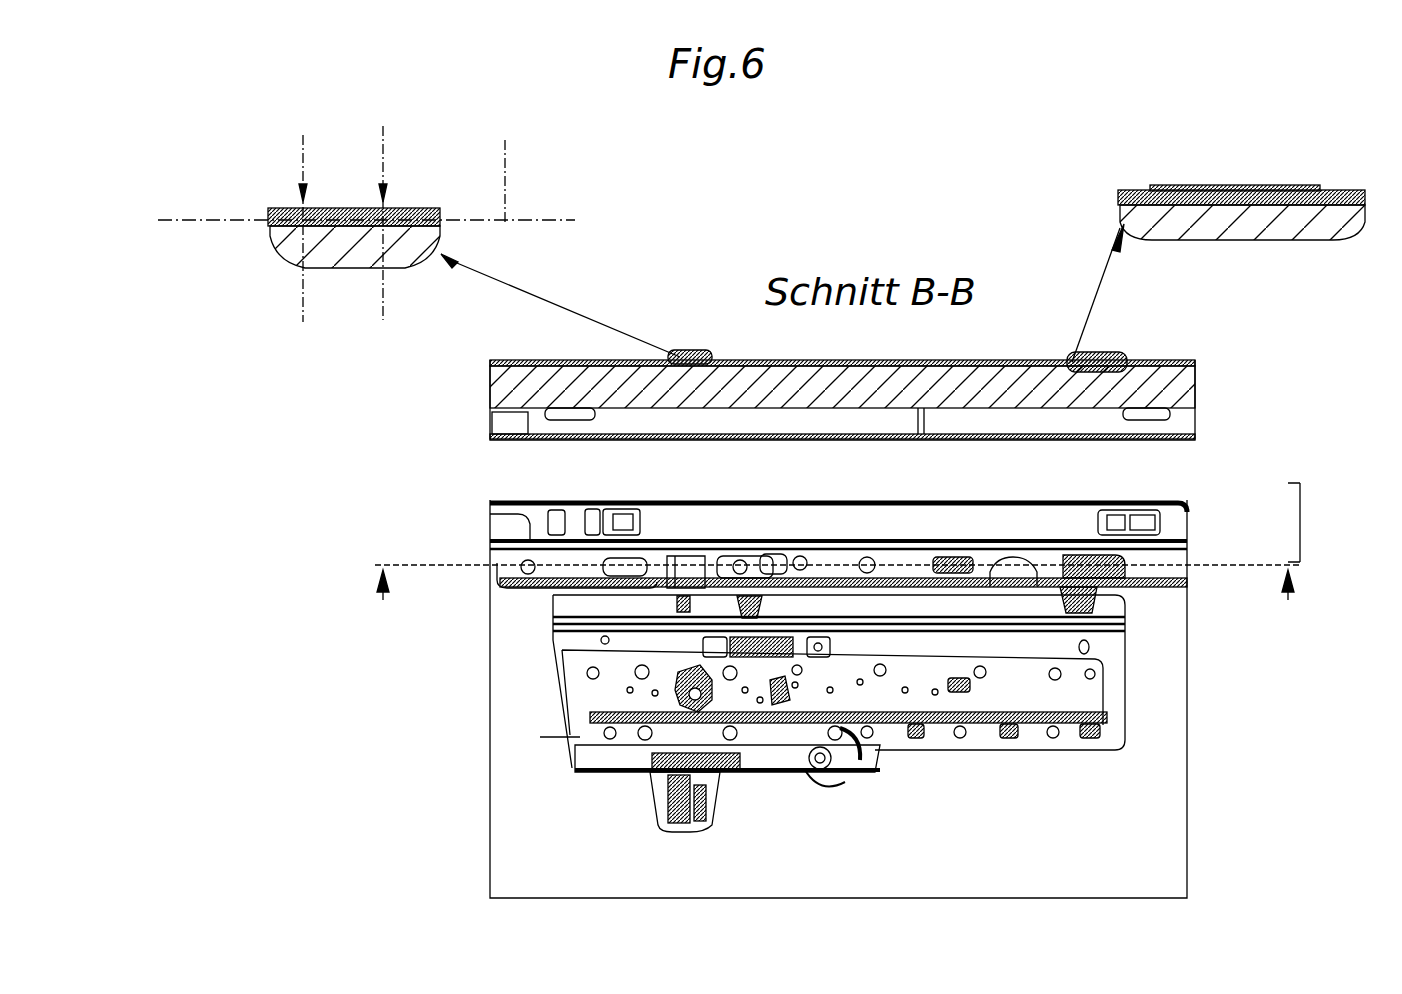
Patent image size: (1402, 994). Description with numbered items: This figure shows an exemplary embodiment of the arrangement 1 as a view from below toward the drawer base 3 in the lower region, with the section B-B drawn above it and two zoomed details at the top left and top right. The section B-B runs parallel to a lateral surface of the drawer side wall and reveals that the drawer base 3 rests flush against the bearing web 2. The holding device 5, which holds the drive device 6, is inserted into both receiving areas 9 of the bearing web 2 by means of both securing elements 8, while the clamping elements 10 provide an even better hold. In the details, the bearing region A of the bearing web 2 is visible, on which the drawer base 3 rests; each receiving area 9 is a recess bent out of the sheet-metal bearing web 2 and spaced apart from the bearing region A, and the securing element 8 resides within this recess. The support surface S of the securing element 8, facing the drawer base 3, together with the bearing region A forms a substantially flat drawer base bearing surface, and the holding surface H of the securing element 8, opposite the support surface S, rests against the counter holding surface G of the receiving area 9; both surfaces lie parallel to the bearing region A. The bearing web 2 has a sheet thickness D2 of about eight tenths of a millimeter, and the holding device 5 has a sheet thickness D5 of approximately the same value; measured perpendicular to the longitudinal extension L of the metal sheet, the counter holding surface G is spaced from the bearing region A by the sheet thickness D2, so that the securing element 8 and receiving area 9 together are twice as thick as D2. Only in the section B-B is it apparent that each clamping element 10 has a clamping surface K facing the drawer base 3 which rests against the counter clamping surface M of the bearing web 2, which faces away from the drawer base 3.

The arrangement 1 is at (1302, 516).
The bearing web 2 is at (1172, 560).
The drawer base 3 is at (1140, 793).
The holding device 5 is at (1110, 647).
The drive device 6 is at (1067, 703).
The securing element 8 is at (1215, 243).
The receiving area 9 is at (1306, 194).
The clamping element 10 is at (745, 360).
The section B- B is at (847, 612).
The sheet thickness of the bearing web D2 is at (307, 167).
The sheet thickness of the holding device D5 is at (385, 295).
The longitudinal extension of the metal sheet L is at (504, 181).
The holding surface H is at (1168, 186).
The counter holding surface G is at (1170, 243).
The support surface S is at (1258, 243).
The bearing region A is at (1330, 243).
The counter clamping surface M is at (760, 355).
The clamping surface K is at (734, 372).